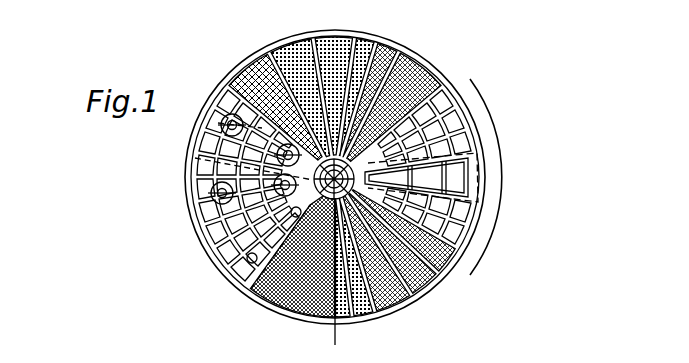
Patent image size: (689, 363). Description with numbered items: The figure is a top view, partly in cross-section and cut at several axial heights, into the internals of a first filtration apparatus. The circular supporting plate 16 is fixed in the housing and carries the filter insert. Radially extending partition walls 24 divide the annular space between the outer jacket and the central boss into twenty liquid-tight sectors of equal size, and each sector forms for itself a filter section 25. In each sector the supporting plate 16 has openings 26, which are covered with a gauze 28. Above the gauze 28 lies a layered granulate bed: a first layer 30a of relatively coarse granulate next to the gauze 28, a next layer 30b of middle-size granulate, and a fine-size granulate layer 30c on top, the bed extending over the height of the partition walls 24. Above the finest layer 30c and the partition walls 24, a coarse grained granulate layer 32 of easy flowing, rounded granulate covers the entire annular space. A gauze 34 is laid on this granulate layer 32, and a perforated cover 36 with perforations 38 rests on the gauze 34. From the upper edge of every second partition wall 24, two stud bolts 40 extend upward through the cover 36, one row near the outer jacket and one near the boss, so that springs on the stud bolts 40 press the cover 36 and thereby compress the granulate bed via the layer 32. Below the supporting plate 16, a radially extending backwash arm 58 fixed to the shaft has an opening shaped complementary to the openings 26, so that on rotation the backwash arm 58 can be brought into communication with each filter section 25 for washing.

The supporting plate 16 is at (450, 259).
The partition walls 24 is at (358, 323).
The filter section 25 is at (420, 278).
The openings 26 is at (450, 140).
The gauze 28 is at (412, 70).
The first layer 30a is at (393, 24).
The next layer 30b is at (333, 47).
The fine size granulate layer 30c is at (288, 50).
The coarse grained granulate layer 32 is at (228, 97).
The gauze 34 is at (249, 298).
The perforated cover 36 is at (220, 173).
The perforations 38 is at (213, 213).
The stud bolts 40 is at (247, 283).
The backwash arm 58 is at (477, 171).